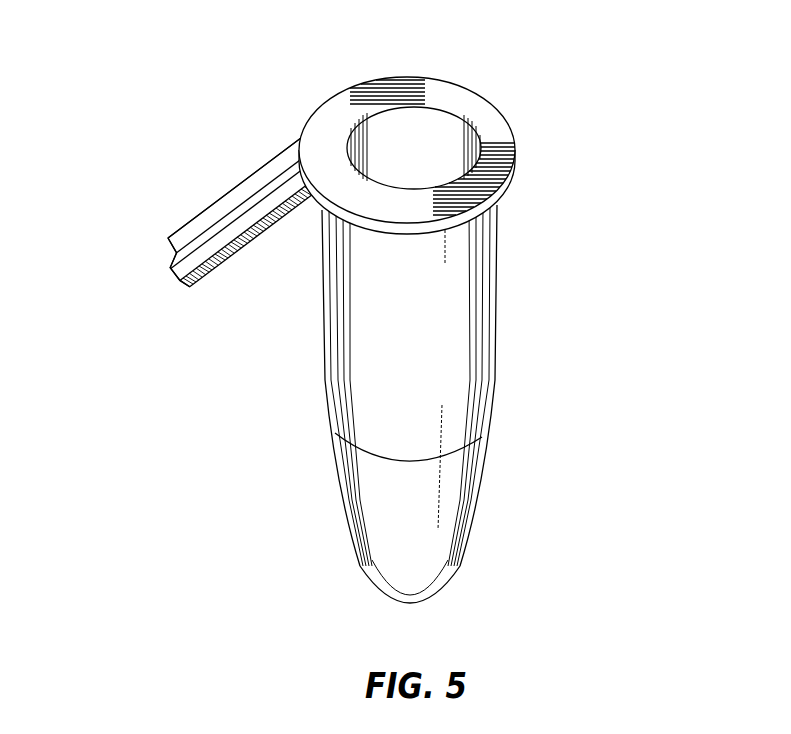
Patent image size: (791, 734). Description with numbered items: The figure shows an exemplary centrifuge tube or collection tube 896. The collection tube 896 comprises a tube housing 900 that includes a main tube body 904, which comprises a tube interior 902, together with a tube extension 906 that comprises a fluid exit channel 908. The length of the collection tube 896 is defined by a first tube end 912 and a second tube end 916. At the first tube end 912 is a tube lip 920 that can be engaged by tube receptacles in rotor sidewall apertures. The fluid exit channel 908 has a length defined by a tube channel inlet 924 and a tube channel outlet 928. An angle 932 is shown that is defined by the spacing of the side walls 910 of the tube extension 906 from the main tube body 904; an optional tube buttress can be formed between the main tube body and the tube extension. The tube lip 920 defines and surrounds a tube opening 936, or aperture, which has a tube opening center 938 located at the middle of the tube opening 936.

The collection tube 896 is at (378, 331).
The tube housing 900 is at (422, 428).
The tube interior 902 is at (377, 124).
The main tube body 904 is at (477, 283).
The tube extension 906 is at (227, 250).
The fluid exit channel 908 is at (258, 250).
The side walls 910 is at (203, 210).
The first tube end 912 is at (498, 208).
The second tube end 916 is at (452, 580).
The tube lip 920 is at (452, 128).
The tube channel inlet 924 is at (293, 137).
The tube channel outlet 928 is at (173, 257).
The angle 932 is at (258, 240).
The tube opening 936 is at (440, 168).
The tube opening center 938 is at (413, 148).